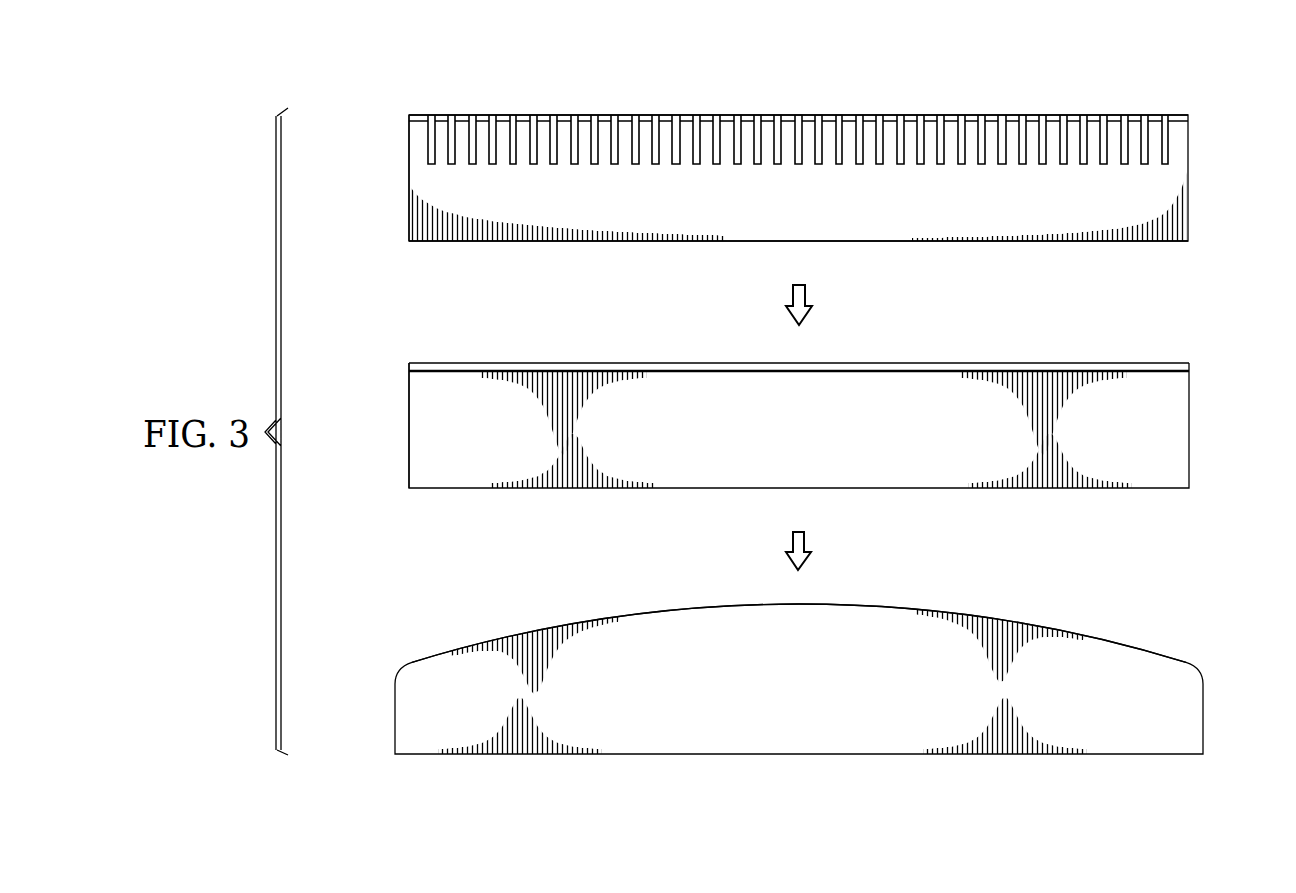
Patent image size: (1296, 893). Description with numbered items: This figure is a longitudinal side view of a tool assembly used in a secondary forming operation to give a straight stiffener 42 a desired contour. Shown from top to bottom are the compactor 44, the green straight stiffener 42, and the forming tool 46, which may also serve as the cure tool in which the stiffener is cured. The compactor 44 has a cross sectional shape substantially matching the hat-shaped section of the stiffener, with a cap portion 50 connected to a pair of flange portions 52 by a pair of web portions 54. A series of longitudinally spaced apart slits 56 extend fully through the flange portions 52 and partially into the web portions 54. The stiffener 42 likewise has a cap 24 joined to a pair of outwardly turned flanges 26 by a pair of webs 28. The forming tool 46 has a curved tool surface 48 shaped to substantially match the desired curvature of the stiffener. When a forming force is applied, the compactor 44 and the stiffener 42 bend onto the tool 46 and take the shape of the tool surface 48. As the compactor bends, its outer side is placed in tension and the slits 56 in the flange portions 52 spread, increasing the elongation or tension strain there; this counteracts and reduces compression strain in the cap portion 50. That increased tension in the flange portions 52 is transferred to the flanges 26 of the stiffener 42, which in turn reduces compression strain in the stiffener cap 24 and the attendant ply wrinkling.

The cap 24 is at (455, 489).
The flanges 26 is at (1189, 371).
The webs 28 is at (418, 437).
The straight stiffener 42 is at (819, 451).
The compactor 44 is at (803, 165).
The forming tool 46 is at (763, 673).
The tool surface 48 is at (1136, 641).
The cap portion 50 is at (463, 243).
The flange portions 52 is at (1187, 129).
The web portions 54 is at (418, 163).
The slits 56 is at (696, 114).